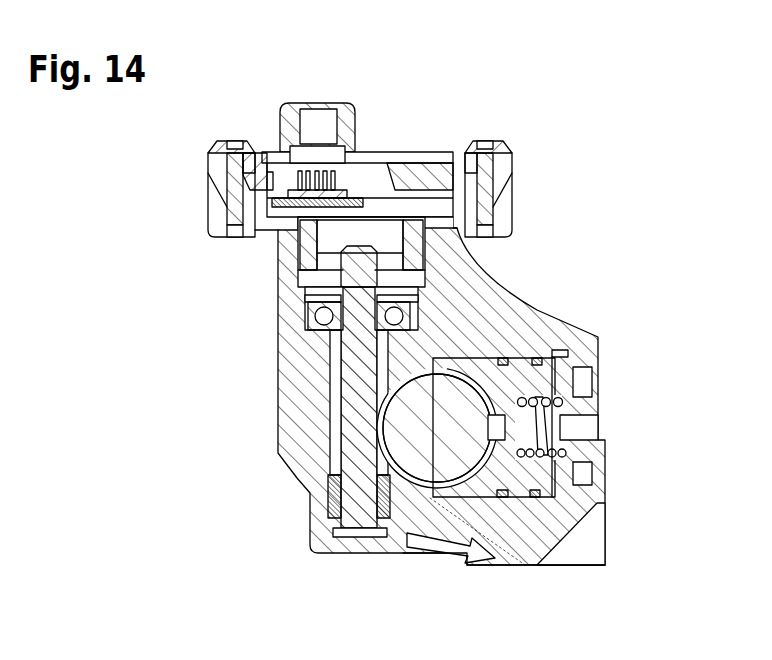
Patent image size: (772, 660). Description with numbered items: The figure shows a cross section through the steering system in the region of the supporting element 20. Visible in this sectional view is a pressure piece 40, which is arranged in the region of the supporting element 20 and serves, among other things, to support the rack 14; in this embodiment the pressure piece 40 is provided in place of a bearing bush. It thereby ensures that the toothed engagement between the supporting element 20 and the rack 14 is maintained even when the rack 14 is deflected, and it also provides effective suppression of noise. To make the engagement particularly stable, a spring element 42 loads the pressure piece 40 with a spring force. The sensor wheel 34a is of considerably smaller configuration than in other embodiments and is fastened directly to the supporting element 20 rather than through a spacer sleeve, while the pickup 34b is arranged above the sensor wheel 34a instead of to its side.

The pickup 34b is at (340, 190).
The sensor wheel 34a is at (300, 228).
The rack 14 is at (452, 417).
The spring element 42 is at (545, 355).
The supporting element 20 is at (360, 410).
The pressure piece 40 is at (480, 473).